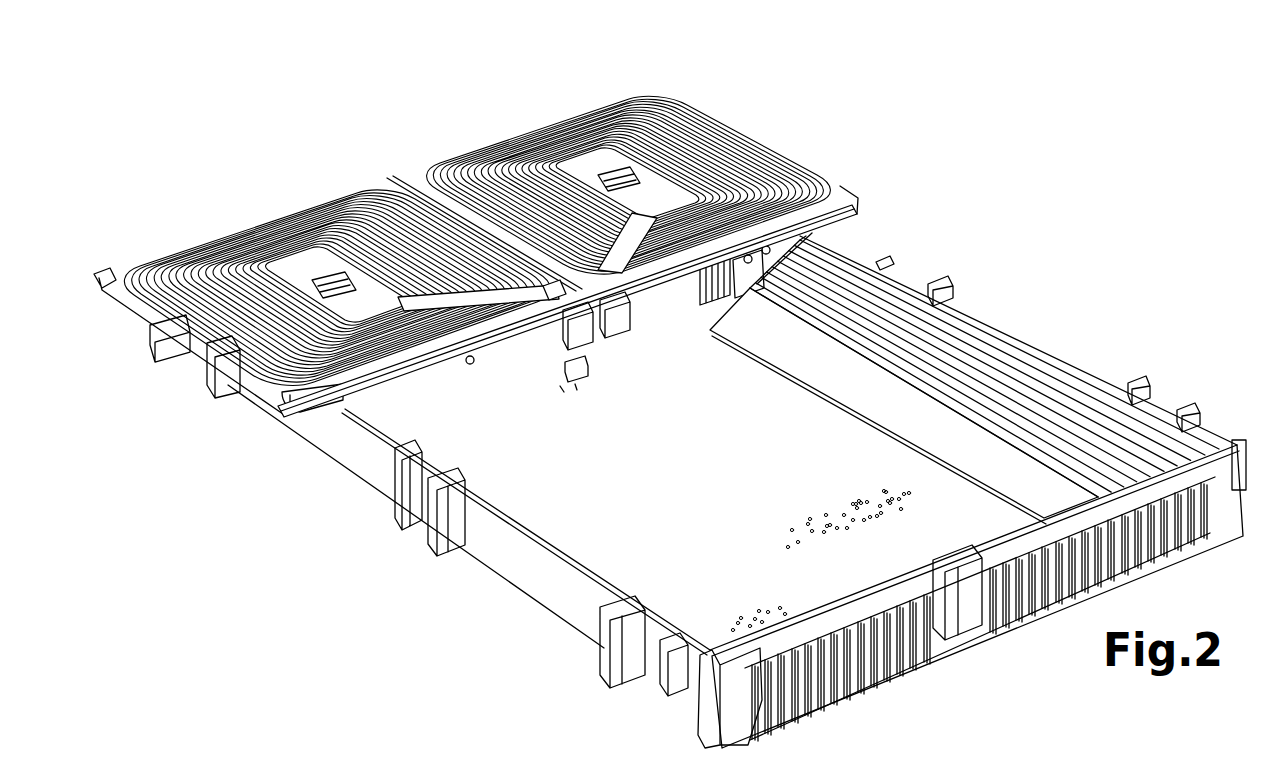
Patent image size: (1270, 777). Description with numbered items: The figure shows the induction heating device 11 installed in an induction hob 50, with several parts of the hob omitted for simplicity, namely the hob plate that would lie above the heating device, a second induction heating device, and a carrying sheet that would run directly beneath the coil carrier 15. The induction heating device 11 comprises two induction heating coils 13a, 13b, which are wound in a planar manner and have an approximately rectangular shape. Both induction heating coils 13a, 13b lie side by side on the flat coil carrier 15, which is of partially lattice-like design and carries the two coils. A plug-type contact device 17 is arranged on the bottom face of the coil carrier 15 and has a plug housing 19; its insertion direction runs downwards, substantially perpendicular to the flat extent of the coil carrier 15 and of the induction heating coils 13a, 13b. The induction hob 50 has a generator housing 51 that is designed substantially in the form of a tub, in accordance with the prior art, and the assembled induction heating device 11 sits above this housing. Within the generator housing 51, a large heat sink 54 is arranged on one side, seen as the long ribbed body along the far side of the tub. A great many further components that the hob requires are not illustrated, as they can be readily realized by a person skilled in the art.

The induction heating device 11 is at (529, 231).
The induction hob 50 is at (670, 378).
The induction heating coil 13a is at (300, 210).
The induction heating coil 13b is at (535, 113).
The coil carrier 15 is at (398, 378).
The plug-type contact device 17 is at (608, 388).
The plug housing 19 is at (645, 341).
The generator housing 51 is at (737, 490).
The heat sink 54 is at (1012, 358).